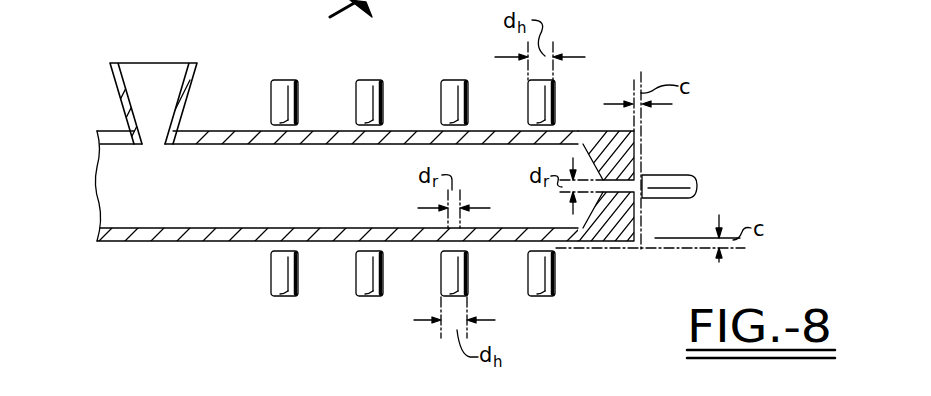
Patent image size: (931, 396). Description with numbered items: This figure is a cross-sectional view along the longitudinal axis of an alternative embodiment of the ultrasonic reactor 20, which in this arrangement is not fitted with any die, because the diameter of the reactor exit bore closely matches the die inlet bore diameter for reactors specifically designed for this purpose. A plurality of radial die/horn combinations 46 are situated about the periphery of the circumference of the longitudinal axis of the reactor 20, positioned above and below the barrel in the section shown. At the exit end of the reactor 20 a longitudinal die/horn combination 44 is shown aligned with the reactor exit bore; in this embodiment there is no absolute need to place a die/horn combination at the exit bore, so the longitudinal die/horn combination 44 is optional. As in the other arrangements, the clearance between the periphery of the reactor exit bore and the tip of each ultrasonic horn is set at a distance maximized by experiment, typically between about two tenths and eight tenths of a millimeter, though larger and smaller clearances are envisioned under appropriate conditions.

The reactor 20 is at (192, 252).
The longitudinal die/horn combination 44 is at (656, 160).
The radial die/horn combination 46 is at (579, 90).